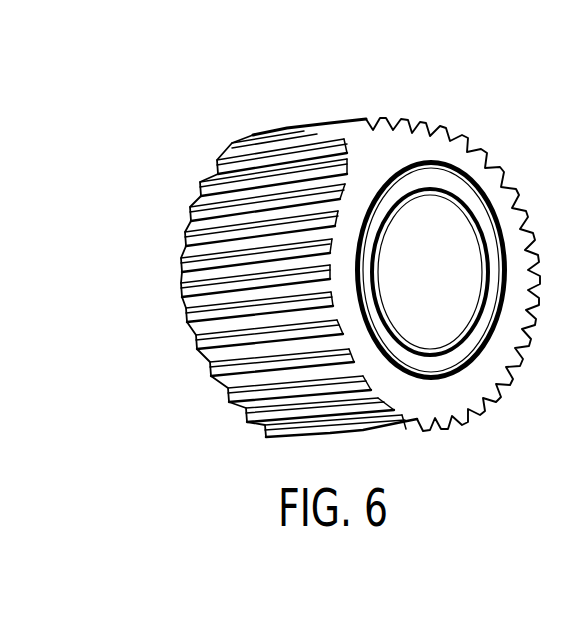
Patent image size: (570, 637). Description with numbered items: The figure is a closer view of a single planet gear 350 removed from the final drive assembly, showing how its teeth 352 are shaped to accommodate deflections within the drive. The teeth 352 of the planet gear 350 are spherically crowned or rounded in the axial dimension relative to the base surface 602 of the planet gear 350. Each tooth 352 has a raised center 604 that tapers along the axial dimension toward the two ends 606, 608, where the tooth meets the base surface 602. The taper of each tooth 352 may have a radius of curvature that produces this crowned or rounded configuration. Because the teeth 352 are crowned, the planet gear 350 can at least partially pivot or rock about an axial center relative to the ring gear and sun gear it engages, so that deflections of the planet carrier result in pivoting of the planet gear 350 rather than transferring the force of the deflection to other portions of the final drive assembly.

The planet gear 350 is at (448, 108).
The teeth 352 is at (222, 153).
The base surface 602 is at (190, 229).
The raised center 604 is at (303, 126).
The end 606 is at (233, 142).
The end 608 is at (373, 130).